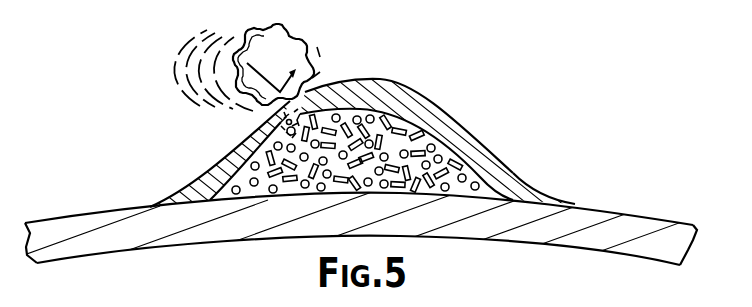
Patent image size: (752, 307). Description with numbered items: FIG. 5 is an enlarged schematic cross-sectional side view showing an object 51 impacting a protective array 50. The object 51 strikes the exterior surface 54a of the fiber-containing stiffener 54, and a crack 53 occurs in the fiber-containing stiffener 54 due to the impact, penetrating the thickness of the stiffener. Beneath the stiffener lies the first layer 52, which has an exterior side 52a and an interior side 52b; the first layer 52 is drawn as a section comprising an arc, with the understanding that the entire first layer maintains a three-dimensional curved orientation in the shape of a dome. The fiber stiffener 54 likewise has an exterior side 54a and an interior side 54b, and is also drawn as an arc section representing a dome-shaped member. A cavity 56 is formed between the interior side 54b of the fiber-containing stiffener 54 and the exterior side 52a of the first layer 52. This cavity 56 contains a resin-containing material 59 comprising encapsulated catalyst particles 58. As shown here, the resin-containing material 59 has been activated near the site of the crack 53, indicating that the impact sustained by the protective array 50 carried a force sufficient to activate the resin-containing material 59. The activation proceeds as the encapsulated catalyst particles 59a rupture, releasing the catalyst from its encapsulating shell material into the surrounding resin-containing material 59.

The protective array 50 is at (550, 97).
The object 51 is at (282, 43).
The first layer 52 is at (688, 250).
The exterior side of first layer 52a is at (673, 222).
The interior side of first layer 52b is at (633, 258).
The crack 53 is at (316, 106).
The fiber-containing stiffener 54 is at (537, 188).
The exterior side of fiber-containing stiffener 54a is at (417, 93).
The interior side of fiber-containing stiffener 54b is at (240, 177).
The cavity 56 is at (427, 140).
The encapsulated catalyst particles 58 is at (378, 140).
The resin-containing material 59 is at (472, 175).
The encapsulated catalyst particles (rupturing) 59a is at (257, 120).